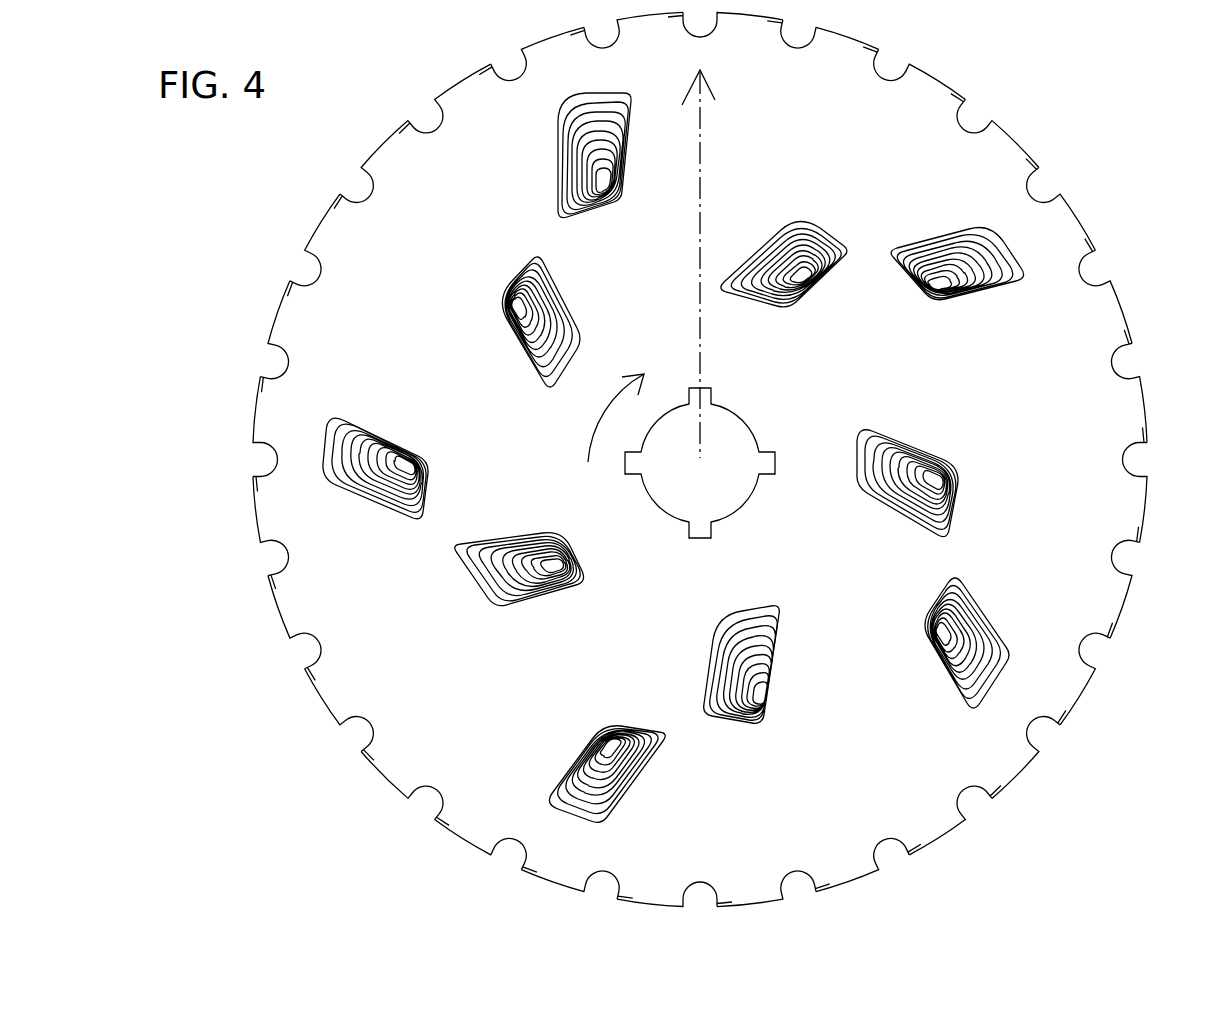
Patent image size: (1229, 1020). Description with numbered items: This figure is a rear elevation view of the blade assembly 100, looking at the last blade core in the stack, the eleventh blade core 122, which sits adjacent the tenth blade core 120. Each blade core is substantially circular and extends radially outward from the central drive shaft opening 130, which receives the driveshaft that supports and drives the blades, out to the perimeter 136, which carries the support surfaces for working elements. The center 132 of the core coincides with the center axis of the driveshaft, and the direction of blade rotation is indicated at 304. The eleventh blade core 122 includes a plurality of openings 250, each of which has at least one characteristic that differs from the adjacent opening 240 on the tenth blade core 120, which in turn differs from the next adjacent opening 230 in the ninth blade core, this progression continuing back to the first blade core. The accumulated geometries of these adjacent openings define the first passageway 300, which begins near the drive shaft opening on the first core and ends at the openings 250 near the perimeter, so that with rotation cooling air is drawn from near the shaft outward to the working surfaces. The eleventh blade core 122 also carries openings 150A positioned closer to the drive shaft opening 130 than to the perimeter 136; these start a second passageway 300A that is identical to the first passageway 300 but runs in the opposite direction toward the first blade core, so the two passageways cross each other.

The blade assembly 100 is at (265, 188).
The tenth blade core 120 is at (973, 117).
The eleventh blade core 122 is at (915, 112).
The perimeter 136 is at (272, 318).
The drive shaft opening 130 is at (685, 492).
The center 132 is at (700, 458).
The blade rotation 304 is at (597, 448).
The first passageway 300 is at (608, 757).
The passageway 300A is at (535, 319).
The openings 150A is at (577, 353).
The openings 250 is at (1005, 248).
The opening 230 is at (980, 645).
The opening 240 is at (987, 688).